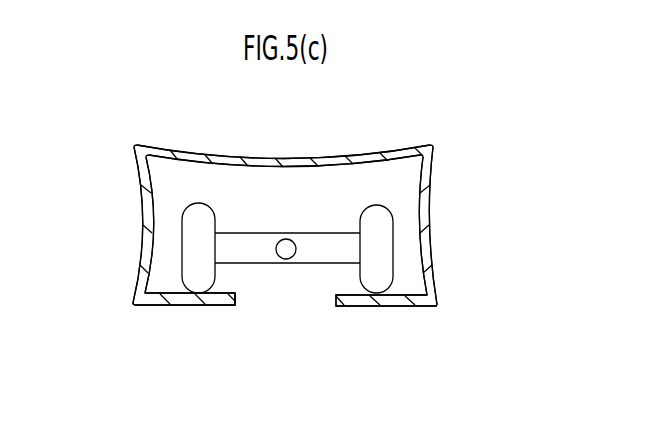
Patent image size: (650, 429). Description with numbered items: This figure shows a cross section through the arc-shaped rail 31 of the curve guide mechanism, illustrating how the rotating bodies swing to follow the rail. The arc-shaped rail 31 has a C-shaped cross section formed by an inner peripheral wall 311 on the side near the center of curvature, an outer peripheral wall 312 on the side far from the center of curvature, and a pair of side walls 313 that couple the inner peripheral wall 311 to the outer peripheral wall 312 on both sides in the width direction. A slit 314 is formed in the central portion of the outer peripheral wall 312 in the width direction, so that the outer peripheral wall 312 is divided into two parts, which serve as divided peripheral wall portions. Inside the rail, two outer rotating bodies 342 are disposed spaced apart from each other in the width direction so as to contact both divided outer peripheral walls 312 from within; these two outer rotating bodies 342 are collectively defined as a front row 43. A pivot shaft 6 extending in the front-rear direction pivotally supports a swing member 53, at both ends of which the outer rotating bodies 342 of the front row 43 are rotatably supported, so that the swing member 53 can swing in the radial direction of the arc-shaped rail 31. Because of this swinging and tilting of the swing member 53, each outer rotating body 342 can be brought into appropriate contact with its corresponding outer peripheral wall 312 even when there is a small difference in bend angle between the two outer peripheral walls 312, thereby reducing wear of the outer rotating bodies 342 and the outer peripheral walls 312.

The arc-shaped rail 31 is at (121, 113).
The inner peripheral wall 311 is at (211, 150).
The outer peripheral wall 312 is at (153, 306).
The side wall 313 is at (144, 214).
The slit 314 is at (238, 298).
The outer rotating body 342 is at (197, 272).
The swing member 53 is at (325, 258).
The pivot shaft 6 is at (284, 239).
The front row 43 is at (168, 259).